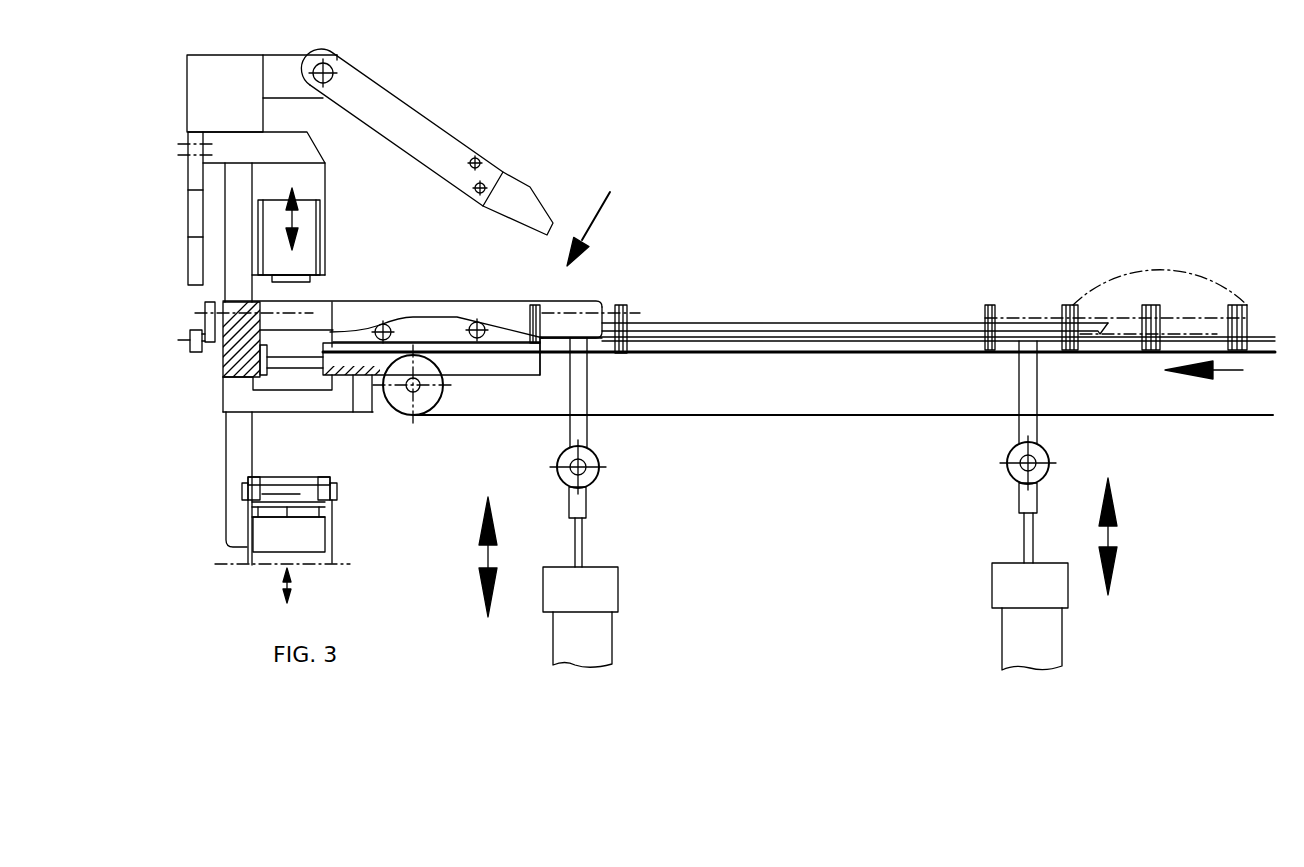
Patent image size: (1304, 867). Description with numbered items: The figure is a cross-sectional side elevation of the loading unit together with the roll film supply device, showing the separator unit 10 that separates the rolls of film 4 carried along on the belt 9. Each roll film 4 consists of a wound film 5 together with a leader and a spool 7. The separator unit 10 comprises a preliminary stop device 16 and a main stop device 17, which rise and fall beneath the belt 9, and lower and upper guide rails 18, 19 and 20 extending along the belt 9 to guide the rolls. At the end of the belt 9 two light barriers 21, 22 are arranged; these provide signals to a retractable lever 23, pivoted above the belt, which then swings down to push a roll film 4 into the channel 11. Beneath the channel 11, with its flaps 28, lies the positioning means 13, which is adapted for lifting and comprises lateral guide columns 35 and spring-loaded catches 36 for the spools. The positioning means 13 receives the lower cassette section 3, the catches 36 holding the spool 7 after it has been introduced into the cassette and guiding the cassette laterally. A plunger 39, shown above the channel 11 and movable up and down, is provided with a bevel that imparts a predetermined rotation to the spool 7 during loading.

The lower cassette section 3 is at (304, 495).
The roll film 4 is at (1031, 303).
The wound film 5 is at (1190, 335).
The spool 7 is at (1158, 305).
The belt 9 is at (828, 416).
The separator unit 10 is at (868, 320).
The channel 11 is at (329, 284).
The positioning means 13 is at (236, 509).
The preliminary stop device 16 is at (1020, 437).
The main stop device 17 is at (583, 507).
The lower guide rail 18 is at (705, 346).
The guide rail 19 is at (752, 330).
The upper guide rail 20 is at (588, 298).
The light barrier 21 is at (386, 322).
The light barrier 22 is at (470, 320).
The retractable lever 23 is at (416, 122).
The flaps 28 is at (302, 345).
The lateral guide columns 35 is at (248, 525).
The spring-loaded catches 36 is at (322, 476).
The plunger 39 is at (302, 272).